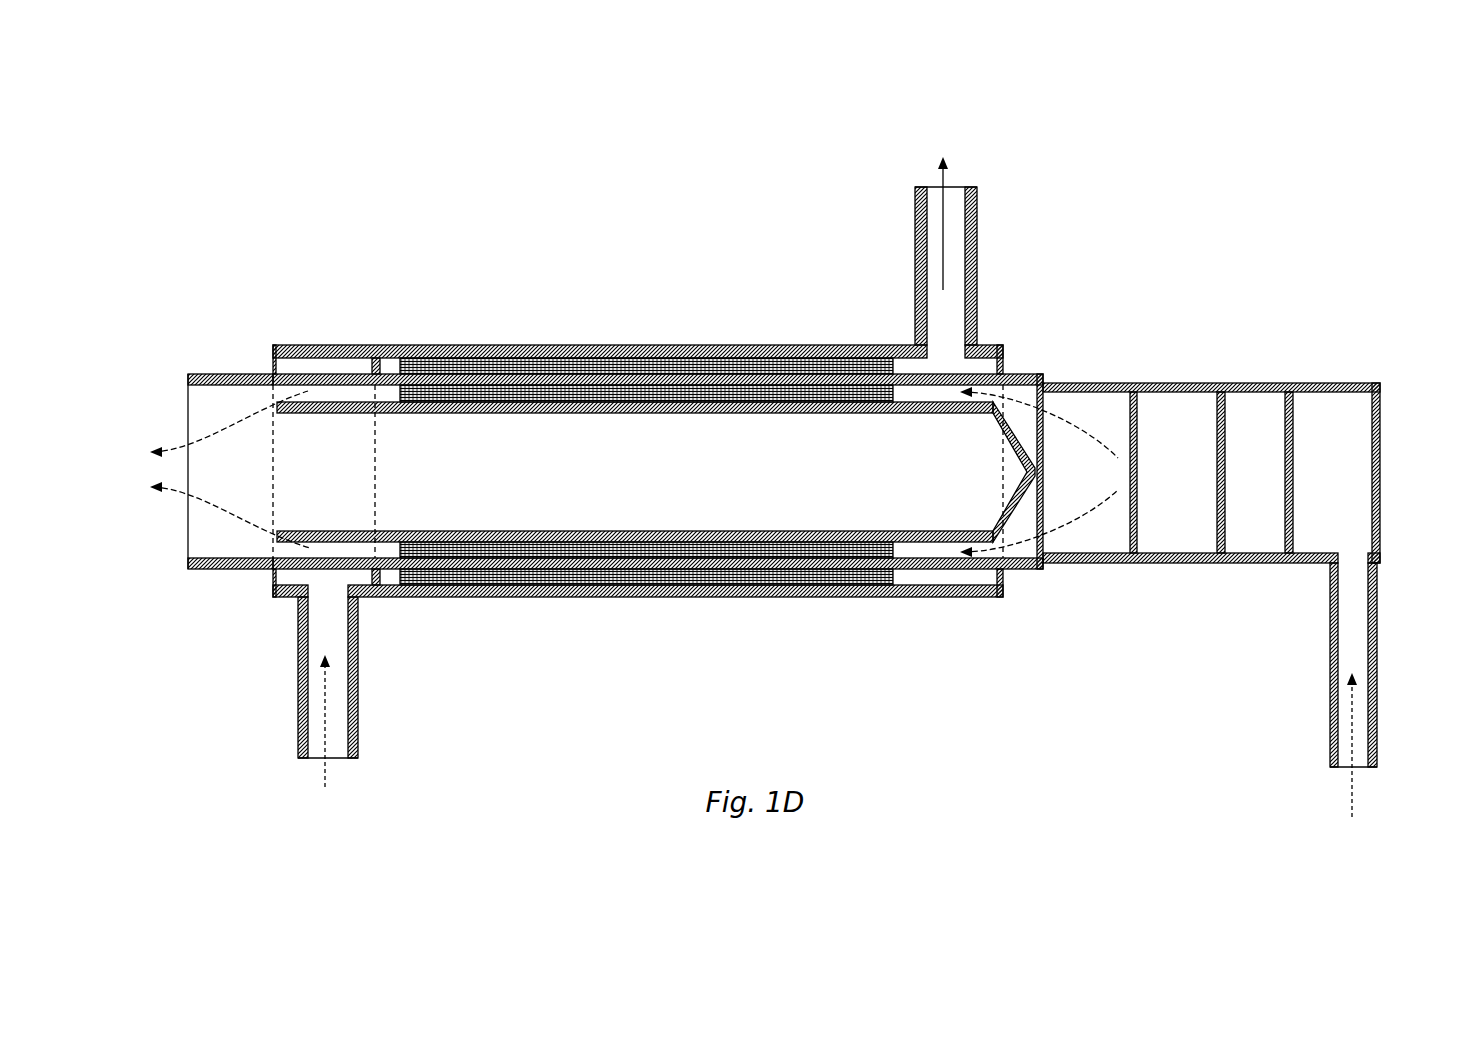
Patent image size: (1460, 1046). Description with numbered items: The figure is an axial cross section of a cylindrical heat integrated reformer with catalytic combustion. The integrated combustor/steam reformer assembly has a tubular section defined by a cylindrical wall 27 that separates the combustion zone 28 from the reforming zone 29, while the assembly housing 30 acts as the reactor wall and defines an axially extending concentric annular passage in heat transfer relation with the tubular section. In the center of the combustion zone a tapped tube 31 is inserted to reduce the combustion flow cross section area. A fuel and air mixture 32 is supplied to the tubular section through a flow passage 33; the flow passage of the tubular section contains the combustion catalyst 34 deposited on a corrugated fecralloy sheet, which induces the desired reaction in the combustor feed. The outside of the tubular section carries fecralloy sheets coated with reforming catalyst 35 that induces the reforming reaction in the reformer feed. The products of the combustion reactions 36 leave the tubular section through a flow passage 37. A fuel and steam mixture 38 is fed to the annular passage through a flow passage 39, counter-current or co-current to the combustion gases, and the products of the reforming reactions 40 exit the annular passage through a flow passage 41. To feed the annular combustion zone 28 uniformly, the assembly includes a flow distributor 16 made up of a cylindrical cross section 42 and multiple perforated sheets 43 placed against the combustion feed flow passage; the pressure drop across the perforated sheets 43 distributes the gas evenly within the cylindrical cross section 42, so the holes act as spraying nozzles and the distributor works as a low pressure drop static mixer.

The flow distributor 16 is at (1248, 405).
The cylindrical wall 27 is at (360, 345).
The combustion zone 28 is at (719, 557).
The reforming zone 29 is at (646, 396).
The assembly housing 30 is at (388, 345).
The tapped tube 31 is at (571, 597).
The fuel and air mixture 32 is at (1353, 766).
The flow passage 33 is at (1372, 770).
The combustion catalyst 34 is at (795, 600).
The reforming catalyst 35 is at (570, 350).
The products of the combustion reactions 36 is at (194, 469).
The flow passage 37 is at (188, 378).
The fuel and steam mixture 38 is at (358, 746).
The flow passage 39 is at (375, 750).
The products of the reforming reactions 40 is at (975, 181).
The flow passage 41 is at (915, 195).
The cylindrical cross section 42 is at (1090, 385).
The perforated sheets 43 is at (1280, 402).